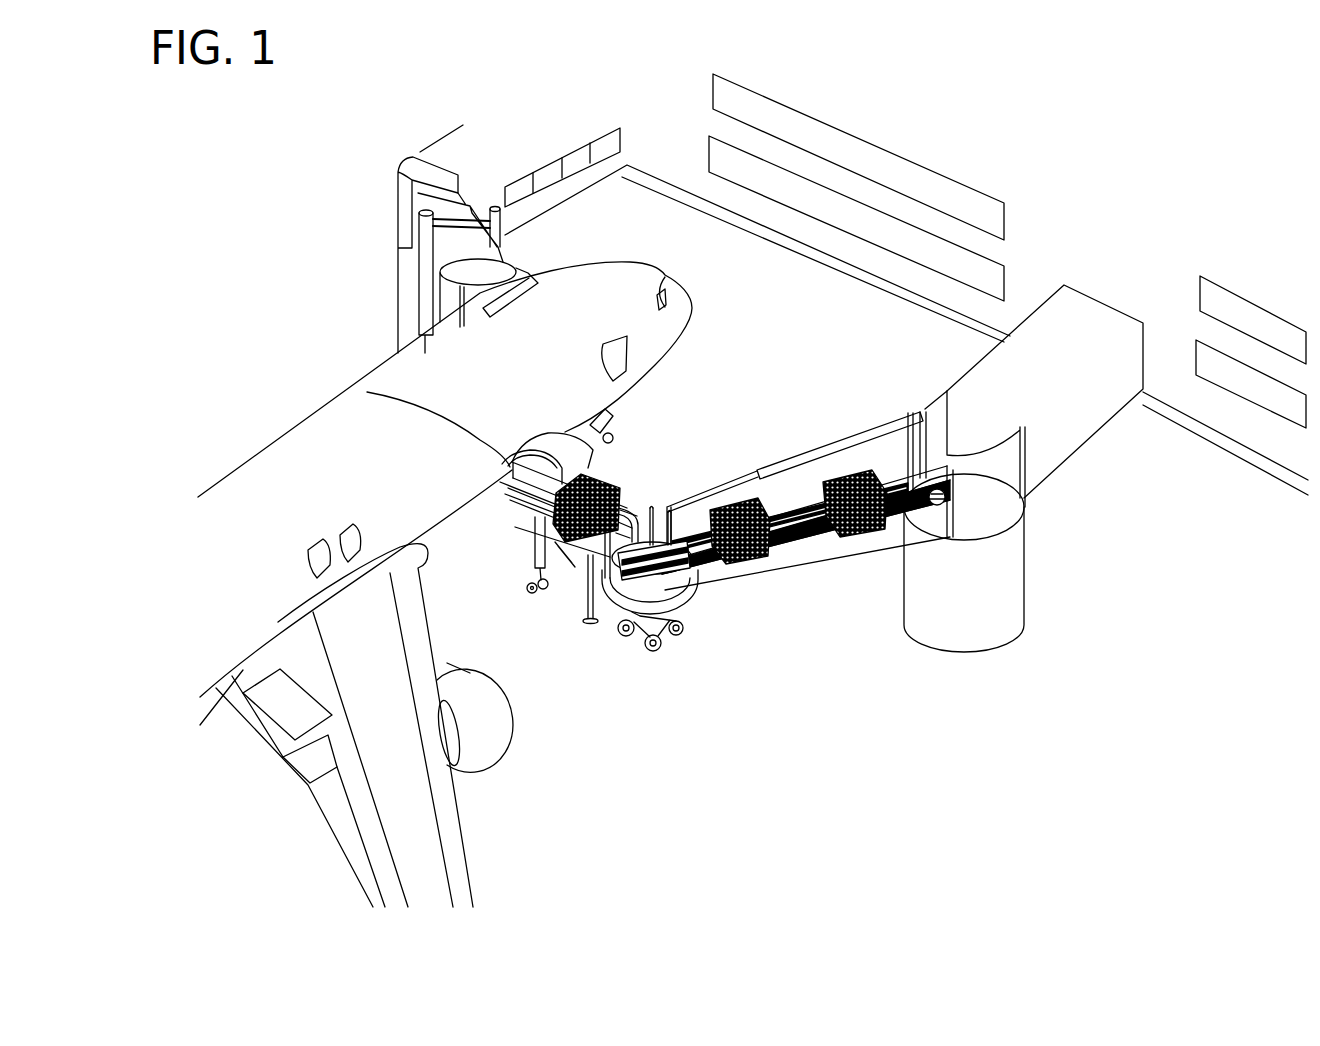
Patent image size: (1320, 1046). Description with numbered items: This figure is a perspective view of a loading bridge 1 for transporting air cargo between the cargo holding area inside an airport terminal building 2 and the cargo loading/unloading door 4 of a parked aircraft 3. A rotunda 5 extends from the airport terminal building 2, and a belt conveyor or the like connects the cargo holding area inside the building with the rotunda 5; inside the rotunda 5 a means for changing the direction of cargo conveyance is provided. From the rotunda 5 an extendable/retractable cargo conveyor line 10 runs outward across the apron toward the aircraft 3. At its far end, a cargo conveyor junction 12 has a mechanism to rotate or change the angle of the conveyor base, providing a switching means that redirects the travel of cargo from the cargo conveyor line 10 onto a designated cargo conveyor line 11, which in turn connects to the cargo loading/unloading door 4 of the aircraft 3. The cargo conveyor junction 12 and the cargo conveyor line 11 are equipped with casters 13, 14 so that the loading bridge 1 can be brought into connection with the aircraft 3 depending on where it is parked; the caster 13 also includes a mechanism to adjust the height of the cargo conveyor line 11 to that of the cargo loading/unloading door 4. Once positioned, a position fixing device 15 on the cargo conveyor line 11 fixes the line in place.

The loading bridge 1 is at (709, 567).
The airport terminal building 2 is at (912, 279).
The aircraft 3 is at (466, 584).
The cargo loading/unloading door 4 is at (367, 392).
The rotunda 5 is at (1008, 552).
The extendable/retractable cargo conveyor line 10 is at (827, 547).
The cargo conveyor line 11 is at (515, 513).
The cargo conveyor junction 12 is at (613, 607).
The caster 13 is at (532, 590).
The caster 14 is at (648, 652).
The position fixing device 15 is at (583, 588).